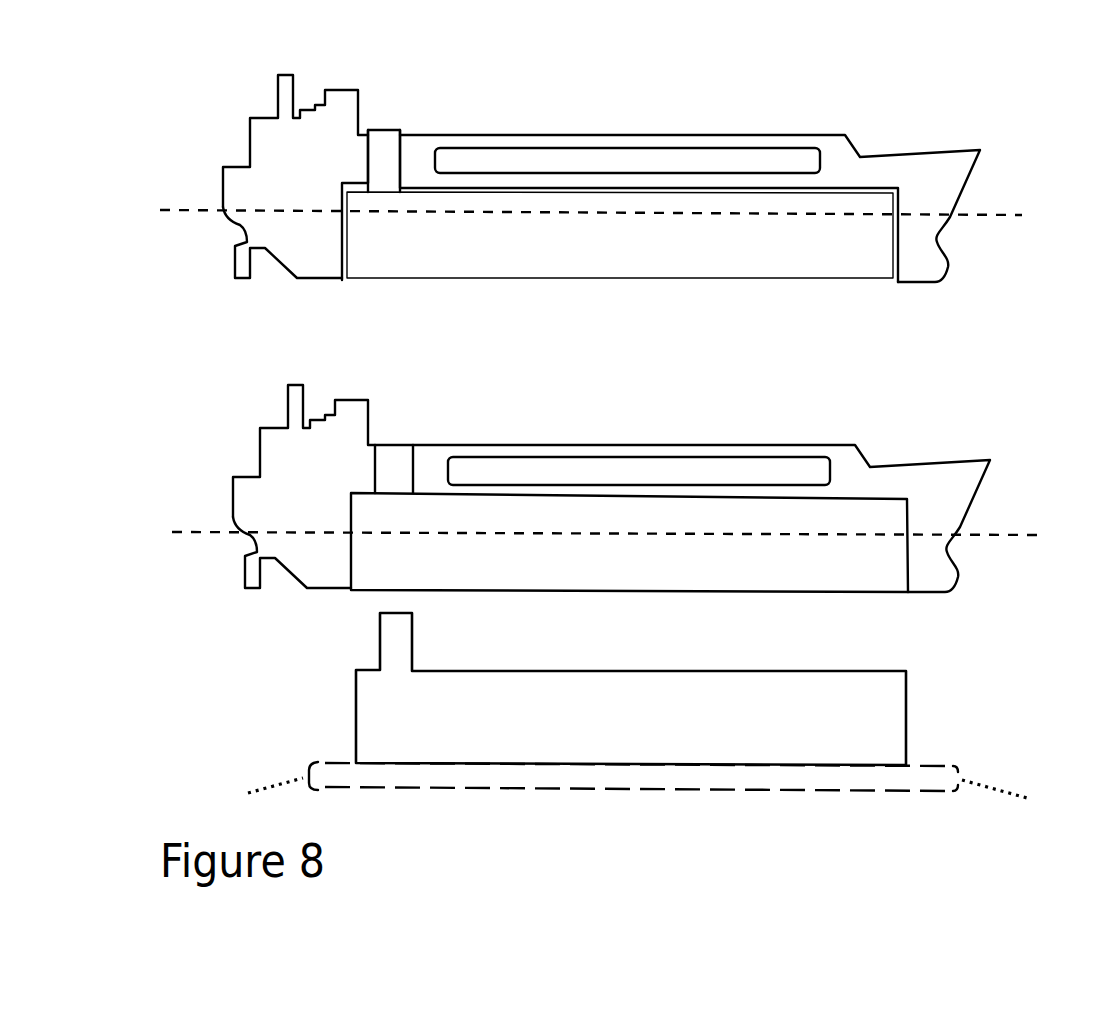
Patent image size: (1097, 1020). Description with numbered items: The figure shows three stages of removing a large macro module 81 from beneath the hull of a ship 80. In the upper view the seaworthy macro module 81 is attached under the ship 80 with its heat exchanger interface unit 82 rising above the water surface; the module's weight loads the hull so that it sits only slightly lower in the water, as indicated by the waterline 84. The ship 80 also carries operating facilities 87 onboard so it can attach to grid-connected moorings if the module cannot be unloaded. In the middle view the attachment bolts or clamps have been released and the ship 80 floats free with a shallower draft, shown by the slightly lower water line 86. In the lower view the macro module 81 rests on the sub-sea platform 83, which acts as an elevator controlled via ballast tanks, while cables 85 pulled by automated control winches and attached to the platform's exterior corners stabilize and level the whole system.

The ship 80 is at (295, 152).
The macro module 81 is at (403, 262).
The heat exchanger interface unit 82 is at (383, 153).
The sub-sea platform 83 is at (917, 780).
The waterline 84 is at (998, 213).
The cables 85 is at (280, 782).
The water line 86 is at (1003, 535).
The operating facilities 87 is at (797, 167).